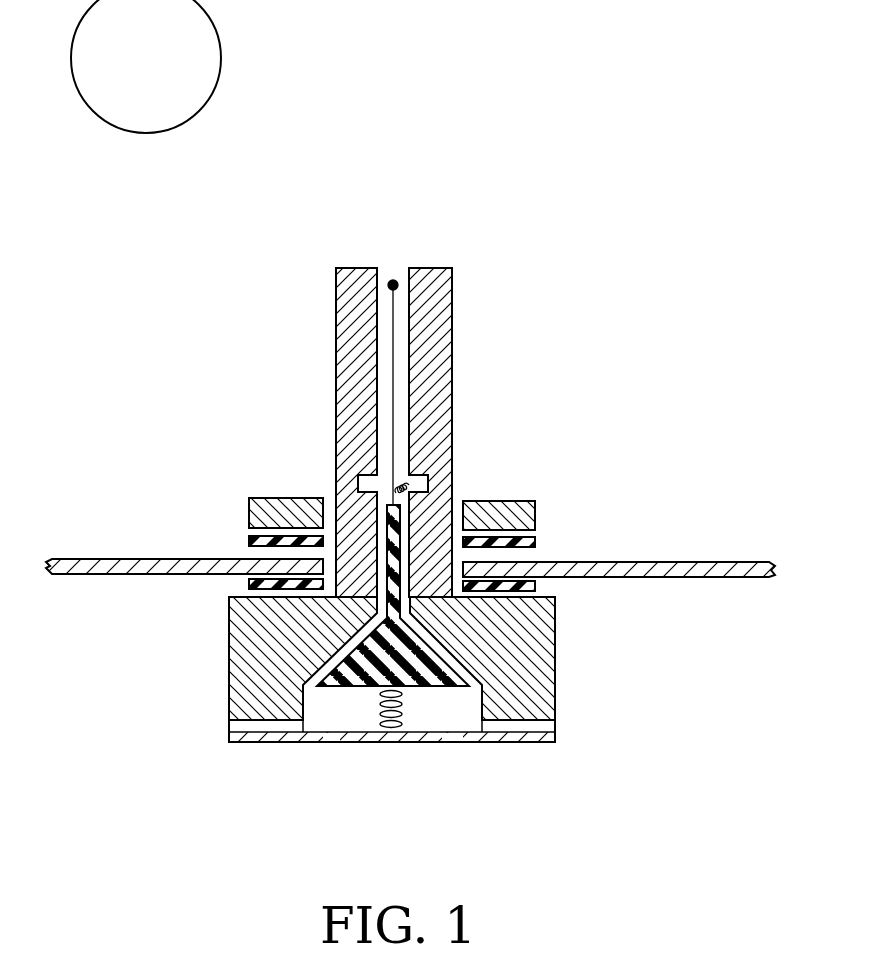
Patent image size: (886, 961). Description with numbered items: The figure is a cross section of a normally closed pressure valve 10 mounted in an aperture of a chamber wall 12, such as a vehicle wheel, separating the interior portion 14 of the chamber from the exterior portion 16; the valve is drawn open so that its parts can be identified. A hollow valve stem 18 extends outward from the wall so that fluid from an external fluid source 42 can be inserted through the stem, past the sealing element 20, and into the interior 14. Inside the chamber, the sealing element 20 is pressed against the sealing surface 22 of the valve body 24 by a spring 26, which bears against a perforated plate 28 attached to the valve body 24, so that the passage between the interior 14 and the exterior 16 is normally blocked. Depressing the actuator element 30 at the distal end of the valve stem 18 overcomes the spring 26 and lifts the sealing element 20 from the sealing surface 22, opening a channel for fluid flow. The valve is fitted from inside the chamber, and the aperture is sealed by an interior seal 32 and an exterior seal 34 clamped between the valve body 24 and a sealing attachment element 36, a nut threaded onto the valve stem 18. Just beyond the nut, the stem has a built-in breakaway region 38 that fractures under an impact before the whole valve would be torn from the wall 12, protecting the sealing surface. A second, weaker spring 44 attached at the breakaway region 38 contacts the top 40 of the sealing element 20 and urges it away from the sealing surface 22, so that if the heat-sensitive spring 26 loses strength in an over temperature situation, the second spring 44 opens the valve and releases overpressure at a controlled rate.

The pressure valve 10 is at (532, 270).
The chamber wall 12 is at (702, 562).
The interior portion 14 is at (684, 725).
The exterior portion 16 is at (684, 390).
The valve stem 18 is at (336, 303).
The sealing element 20 is at (378, 715).
The sealing surface 22 is at (445, 647).
The valve body 24 is at (260, 642).
The spring 26 is at (422, 670).
The perforated plate 28 is at (503, 745).
The actuator element 30 is at (393, 268).
The interior seal 32 is at (249, 583).
The exterior seal 34 is at (249, 541).
The sealing attachment element 36 is at (248, 507).
The breakaway region 38 is at (427, 481).
The top of the sealing element 40 is at (390, 505).
The external fluid source 42 is at (146, 66).
The second spring 44 is at (403, 480).